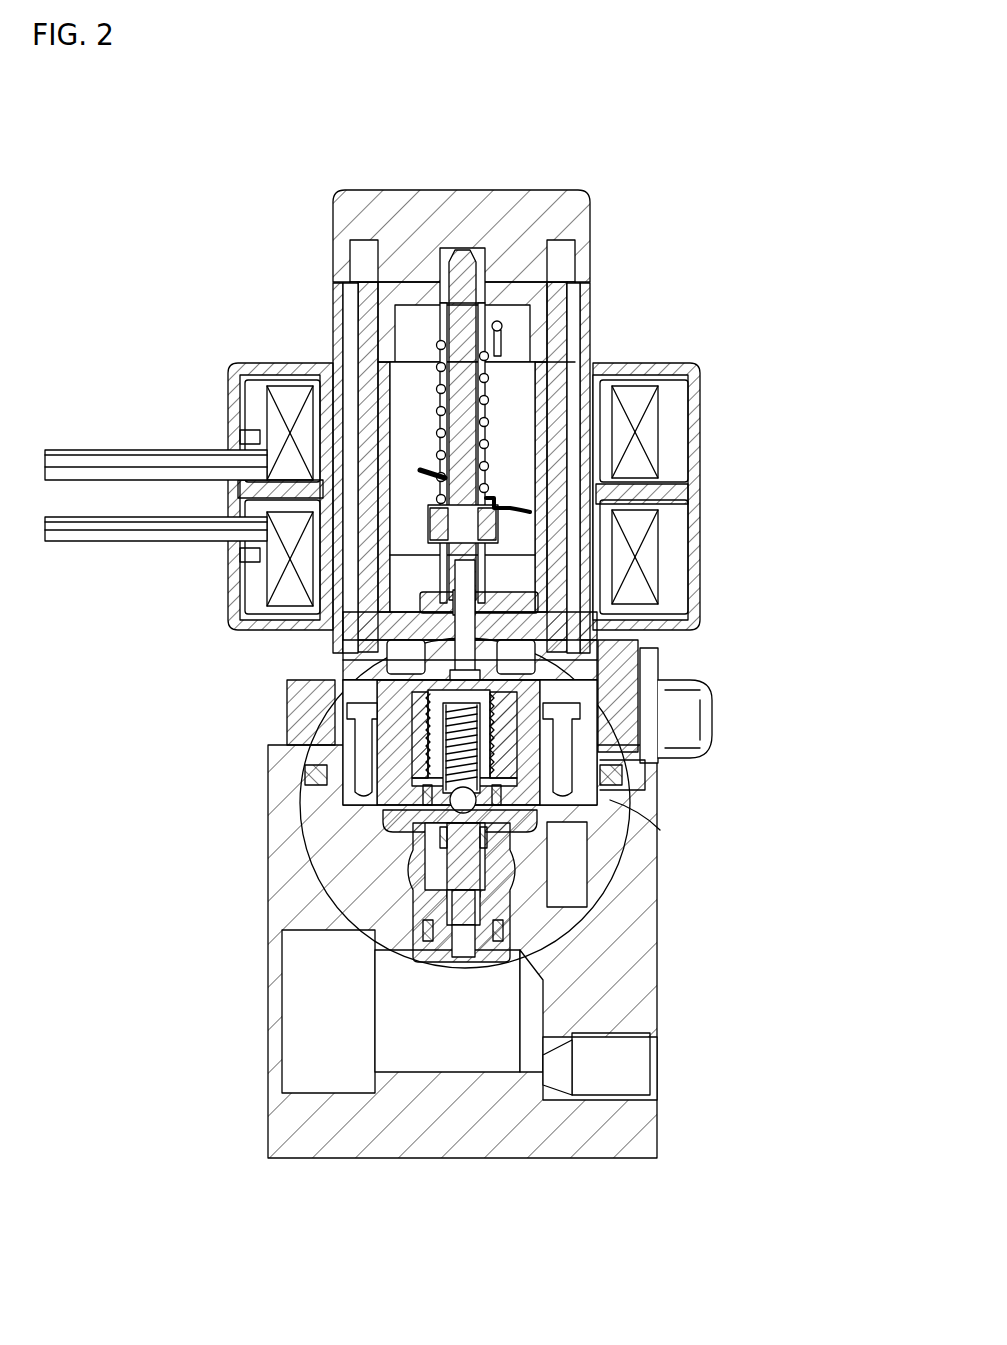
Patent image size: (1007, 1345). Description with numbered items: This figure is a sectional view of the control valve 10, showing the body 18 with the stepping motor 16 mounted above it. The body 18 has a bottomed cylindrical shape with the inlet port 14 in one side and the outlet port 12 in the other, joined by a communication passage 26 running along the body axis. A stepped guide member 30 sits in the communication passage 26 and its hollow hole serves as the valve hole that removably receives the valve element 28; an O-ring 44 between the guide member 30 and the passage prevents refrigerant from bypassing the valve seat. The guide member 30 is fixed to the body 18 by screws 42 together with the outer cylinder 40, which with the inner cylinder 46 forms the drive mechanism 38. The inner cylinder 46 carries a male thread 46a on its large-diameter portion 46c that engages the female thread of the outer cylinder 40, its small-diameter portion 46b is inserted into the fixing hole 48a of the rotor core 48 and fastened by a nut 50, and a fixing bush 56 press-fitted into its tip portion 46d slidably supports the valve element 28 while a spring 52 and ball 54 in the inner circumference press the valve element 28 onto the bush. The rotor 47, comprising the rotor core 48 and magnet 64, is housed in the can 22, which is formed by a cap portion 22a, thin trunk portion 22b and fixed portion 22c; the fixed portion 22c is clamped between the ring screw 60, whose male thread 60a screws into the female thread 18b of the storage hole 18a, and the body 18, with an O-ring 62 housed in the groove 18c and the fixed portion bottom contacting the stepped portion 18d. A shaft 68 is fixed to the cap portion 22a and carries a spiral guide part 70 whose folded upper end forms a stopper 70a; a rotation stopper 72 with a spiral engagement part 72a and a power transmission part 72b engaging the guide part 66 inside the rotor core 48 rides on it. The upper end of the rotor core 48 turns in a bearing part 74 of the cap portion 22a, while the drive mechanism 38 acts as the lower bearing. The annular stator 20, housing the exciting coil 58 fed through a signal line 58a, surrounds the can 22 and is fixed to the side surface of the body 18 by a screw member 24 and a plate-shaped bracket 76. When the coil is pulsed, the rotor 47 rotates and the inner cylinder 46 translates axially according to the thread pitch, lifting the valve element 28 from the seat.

The control valve 10 is at (352, 165).
The outlet port 12 is at (285, 946).
The inlet port 14 is at (620, 800).
The stepping motor 16 is at (407, 453).
The body 18 is at (435, 979).
The storage hole 18a is at (660, 688).
The female thread 18b is at (300, 692).
The groove 18c is at (650, 798).
The stepped portion 18d is at (640, 782).
The stator 20 is at (700, 412).
The can 22 is at (563, 426).
The cap portion 22a is at (592, 212).
The thin trunk portion 22b is at (592, 292).
The fixed portion 22c is at (600, 742).
The screw member 24 is at (655, 760).
The communication passage 26 is at (410, 870).
The valve element 28 is at (500, 880).
The guide member 30 is at (500, 915).
The drive mechanism 38 is at (570, 676).
The outer cylinder 40 is at (482, 660).
The screws 42 is at (590, 828).
The O-ring 44 is at (505, 940).
The inner cylinder 46 is at (473, 785).
The male thread 46a is at (412, 720).
The small-diameter portion 46b is at (352, 674).
The large-diameter portion 46c is at (310, 772).
The tip portion 46d is at (400, 826).
The rotor 47 is at (575, 360).
The rotor core 48 is at (415, 463).
The fixing hole 48a is at (268, 632).
The nut 50 is at (500, 605).
The spring 52 is at (425, 700).
The ball 54 is at (450, 800).
The fixing bush 56 is at (560, 848).
The exciting coil 58 is at (640, 400).
The signal line 58a is at (86, 520).
The ring screw 60 is at (640, 706).
The male thread 60a is at (660, 727).
The O-ring 62 is at (625, 800).
The magnet 64 is at (348, 375).
The guide part 66 is at (530, 410).
The shaft 68 is at (462, 285).
The guide part 70 is at (437, 345).
The stopper 70a is at (502, 338).
The rotation stopper 72 is at (623, 491).
The engagement part 72a is at (520, 472).
The power transmission part 72b is at (522, 505).
The bearing part 74 is at (385, 330).
The bracket 76 is at (478, 632).